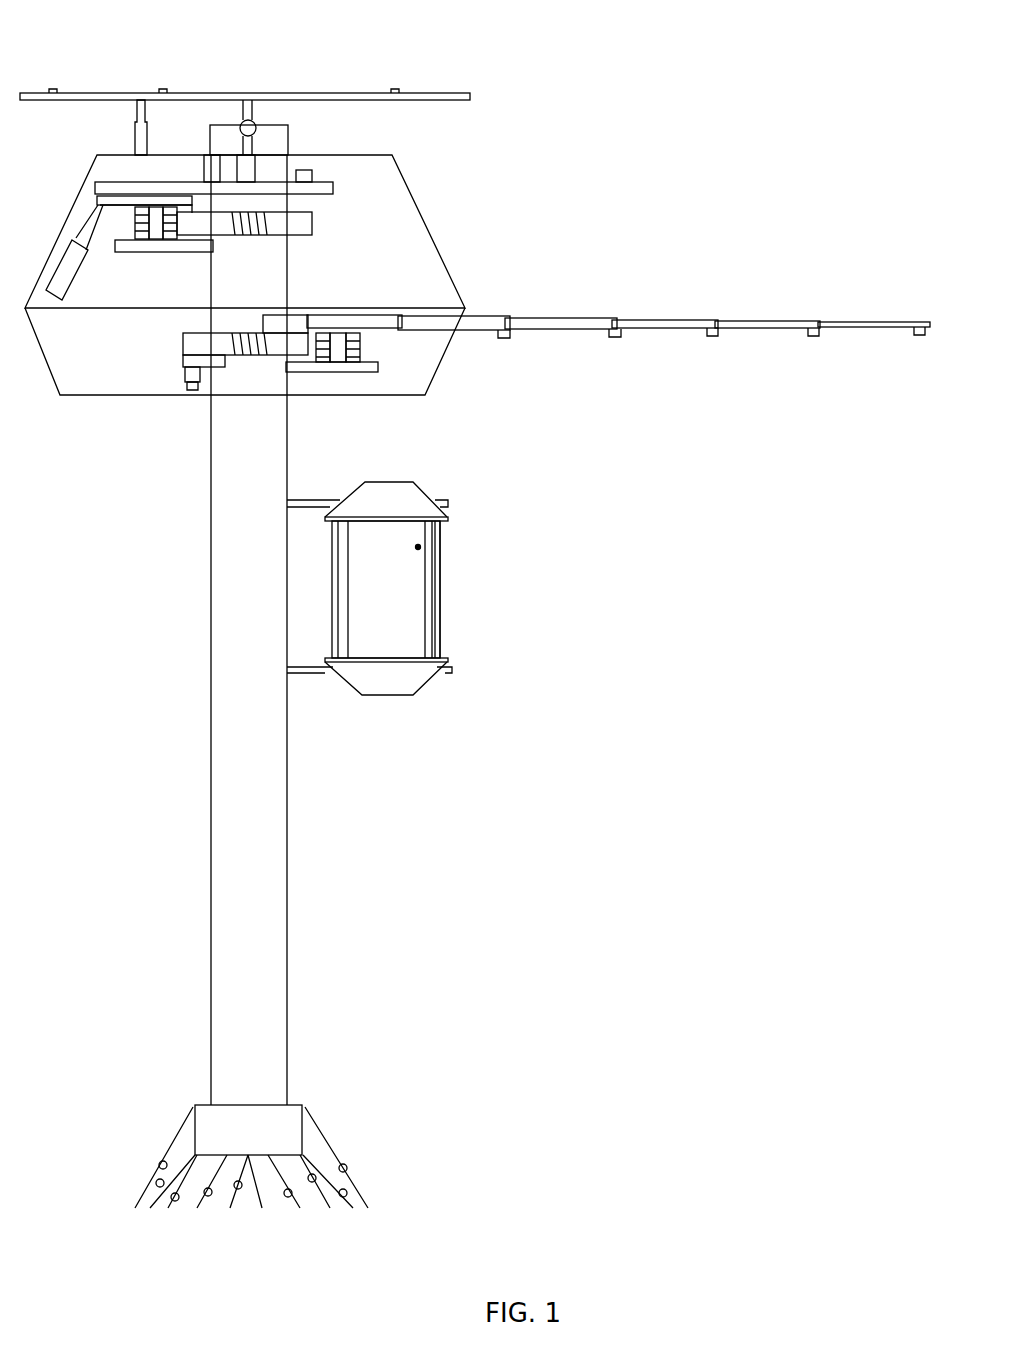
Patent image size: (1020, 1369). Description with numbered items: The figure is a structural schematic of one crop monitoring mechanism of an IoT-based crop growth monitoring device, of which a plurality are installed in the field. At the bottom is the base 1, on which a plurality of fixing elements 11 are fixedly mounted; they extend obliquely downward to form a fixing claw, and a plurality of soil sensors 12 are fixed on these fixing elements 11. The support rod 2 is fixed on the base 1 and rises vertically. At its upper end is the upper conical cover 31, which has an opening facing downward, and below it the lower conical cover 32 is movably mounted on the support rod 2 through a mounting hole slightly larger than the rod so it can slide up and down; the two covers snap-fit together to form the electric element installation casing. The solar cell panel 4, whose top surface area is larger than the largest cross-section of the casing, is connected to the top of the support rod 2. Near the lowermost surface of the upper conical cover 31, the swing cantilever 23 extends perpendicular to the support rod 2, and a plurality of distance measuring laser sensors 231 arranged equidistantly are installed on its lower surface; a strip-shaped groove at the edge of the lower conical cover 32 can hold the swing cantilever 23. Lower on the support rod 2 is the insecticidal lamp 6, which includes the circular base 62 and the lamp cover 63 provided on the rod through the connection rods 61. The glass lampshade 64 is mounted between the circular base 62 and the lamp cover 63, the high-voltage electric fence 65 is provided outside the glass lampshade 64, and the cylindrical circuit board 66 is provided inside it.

The base 1 is at (209, 1107).
The fixing element 11 is at (172, 1147).
The soil sensor 12 is at (157, 1177).
The support rod 2 is at (212, 713).
The swing cantilever 23 is at (571, 336).
The distance measuring laser sensor 231 is at (620, 336).
The upper conical cover 31 is at (415, 199).
The lower conical cover 32 is at (443, 373).
The solar cell panel 4 is at (232, 94).
The insecticidal lamp 6 is at (409, 611).
The connection rod 61 is at (308, 497).
The circular base 62 is at (413, 686).
The lamp cover 63 is at (392, 497).
The glass lampshade 64 is at (437, 578).
The high-voltage electric fence 65 is at (444, 618).
The cylindrical circuit board 66 is at (422, 545).